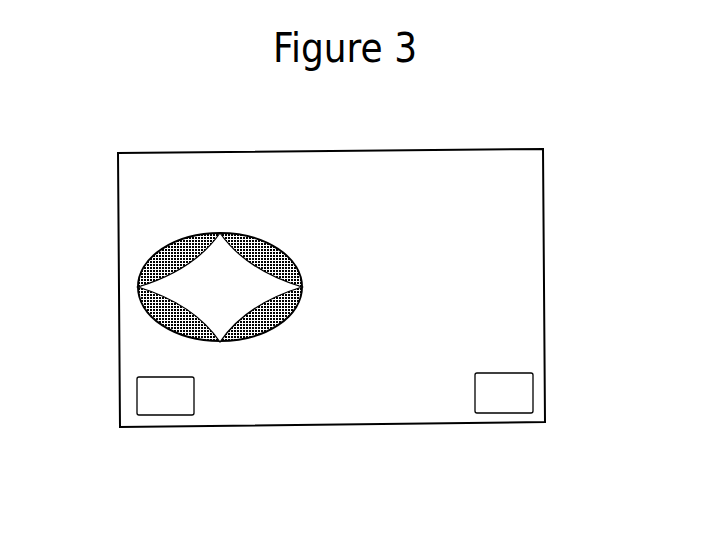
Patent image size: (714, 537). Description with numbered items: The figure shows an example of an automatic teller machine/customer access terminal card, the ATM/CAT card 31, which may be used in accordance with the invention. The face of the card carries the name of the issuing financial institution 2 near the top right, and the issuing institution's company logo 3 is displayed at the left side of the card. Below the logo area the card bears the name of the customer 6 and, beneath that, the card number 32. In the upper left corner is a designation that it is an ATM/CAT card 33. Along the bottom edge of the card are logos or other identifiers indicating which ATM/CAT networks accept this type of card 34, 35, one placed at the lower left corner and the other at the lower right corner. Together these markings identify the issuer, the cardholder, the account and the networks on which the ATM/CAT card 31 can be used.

The name of the issuing financial institution 2 is at (413, 166).
The issuing institution's company logo 3 is at (152, 260).
The name of the customer 6 is at (448, 309).
The ATM/CAT card 31 is at (544, 208).
The card number 32 is at (468, 350).
The designation that it is an ATM/CAT card 33 is at (180, 170).
The ATM/CAT network identifier 34 is at (137, 393).
The ATM/CAT network identifier 35 is at (533, 393).